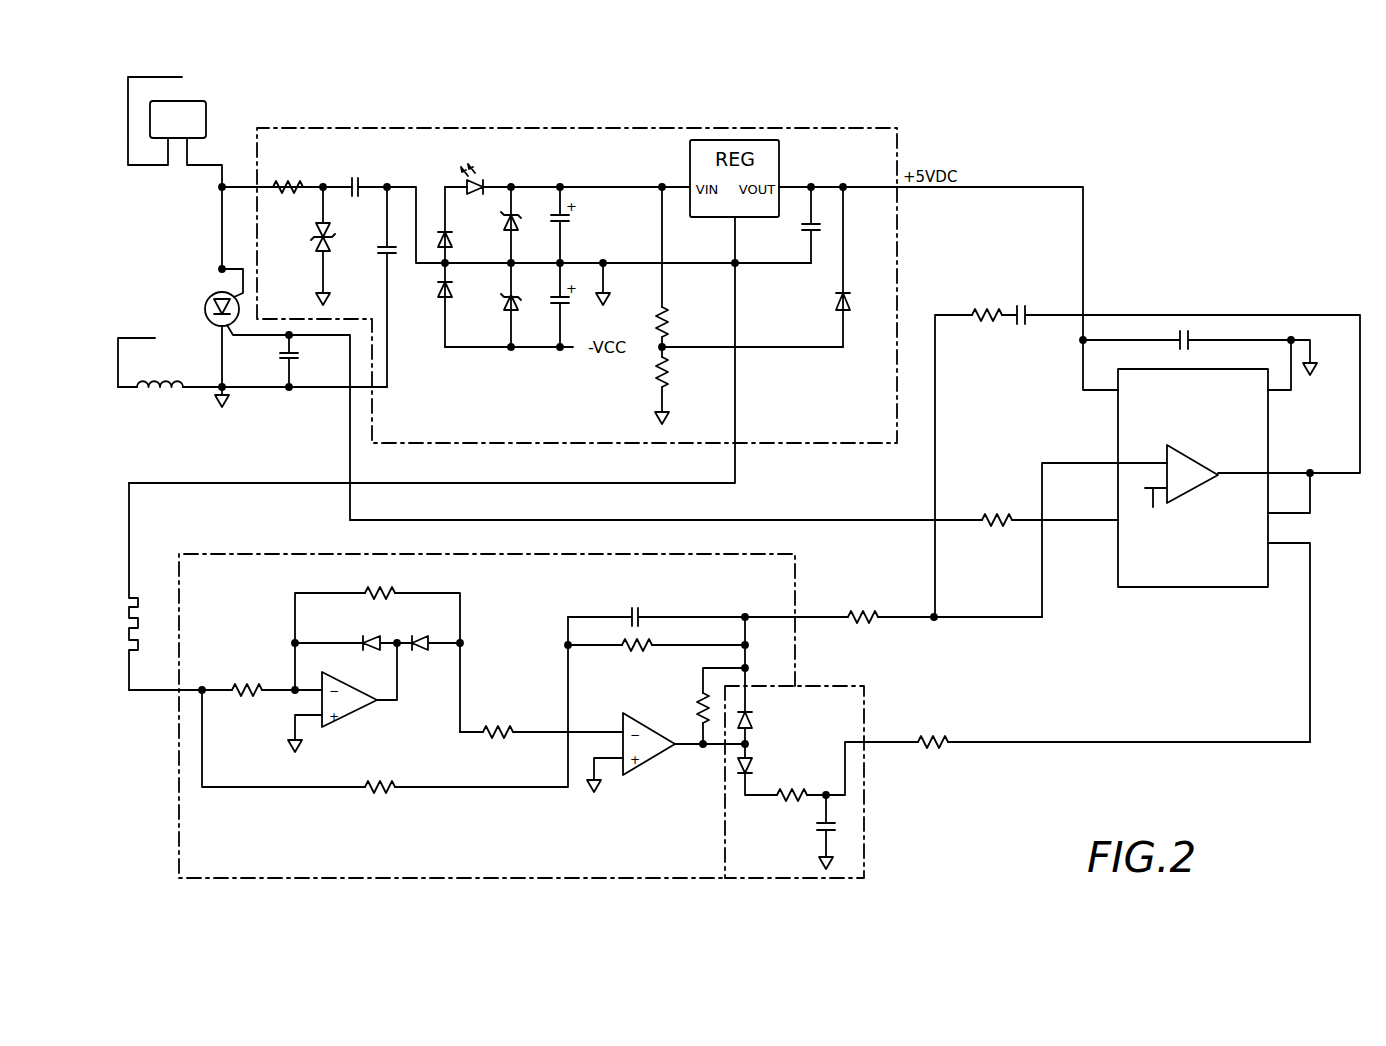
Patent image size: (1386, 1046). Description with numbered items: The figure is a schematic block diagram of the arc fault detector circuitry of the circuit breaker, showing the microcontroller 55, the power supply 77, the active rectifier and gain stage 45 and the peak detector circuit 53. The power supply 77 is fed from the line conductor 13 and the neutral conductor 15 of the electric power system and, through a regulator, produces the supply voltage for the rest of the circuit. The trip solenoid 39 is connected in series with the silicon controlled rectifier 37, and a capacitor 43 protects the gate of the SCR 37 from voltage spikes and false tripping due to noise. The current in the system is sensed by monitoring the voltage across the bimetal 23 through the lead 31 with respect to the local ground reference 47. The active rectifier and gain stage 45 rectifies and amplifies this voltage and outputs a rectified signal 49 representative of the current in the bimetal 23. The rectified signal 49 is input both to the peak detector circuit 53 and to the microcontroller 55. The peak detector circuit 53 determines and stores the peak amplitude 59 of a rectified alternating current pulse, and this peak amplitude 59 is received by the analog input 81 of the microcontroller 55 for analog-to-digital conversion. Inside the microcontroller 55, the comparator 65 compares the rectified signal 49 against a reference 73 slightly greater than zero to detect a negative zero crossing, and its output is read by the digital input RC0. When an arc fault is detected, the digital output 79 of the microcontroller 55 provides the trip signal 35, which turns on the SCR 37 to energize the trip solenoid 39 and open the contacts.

The line conductor 13 is at (135, 338).
The neutral conductor 15 is at (154, 77).
The bimetal 23 is at (134, 598).
The lead 31 is at (152, 690).
The trip signal 35 is at (965, 522).
The silicon controlled rectifier 37 is at (210, 300).
The trip solenoid 39 is at (206, 103).
The capacitor 43 is at (300, 356).
The active rectifier and gain stage 45 is at (179, 858).
The local ground reference 47 is at (220, 385).
The rectified signal 49 is at (812, 617).
The peak detector circuit 53 is at (866, 800).
The microcontroller 55 is at (1220, 478).
The peak amplitude 59 is at (890, 742).
The comparator 65 is at (1172, 451).
The reference 73 is at (1156, 512).
The power supply 77 is at (832, 127).
The digital output 79 is at (1118, 528).
The analog input 81 is at (1268, 549).